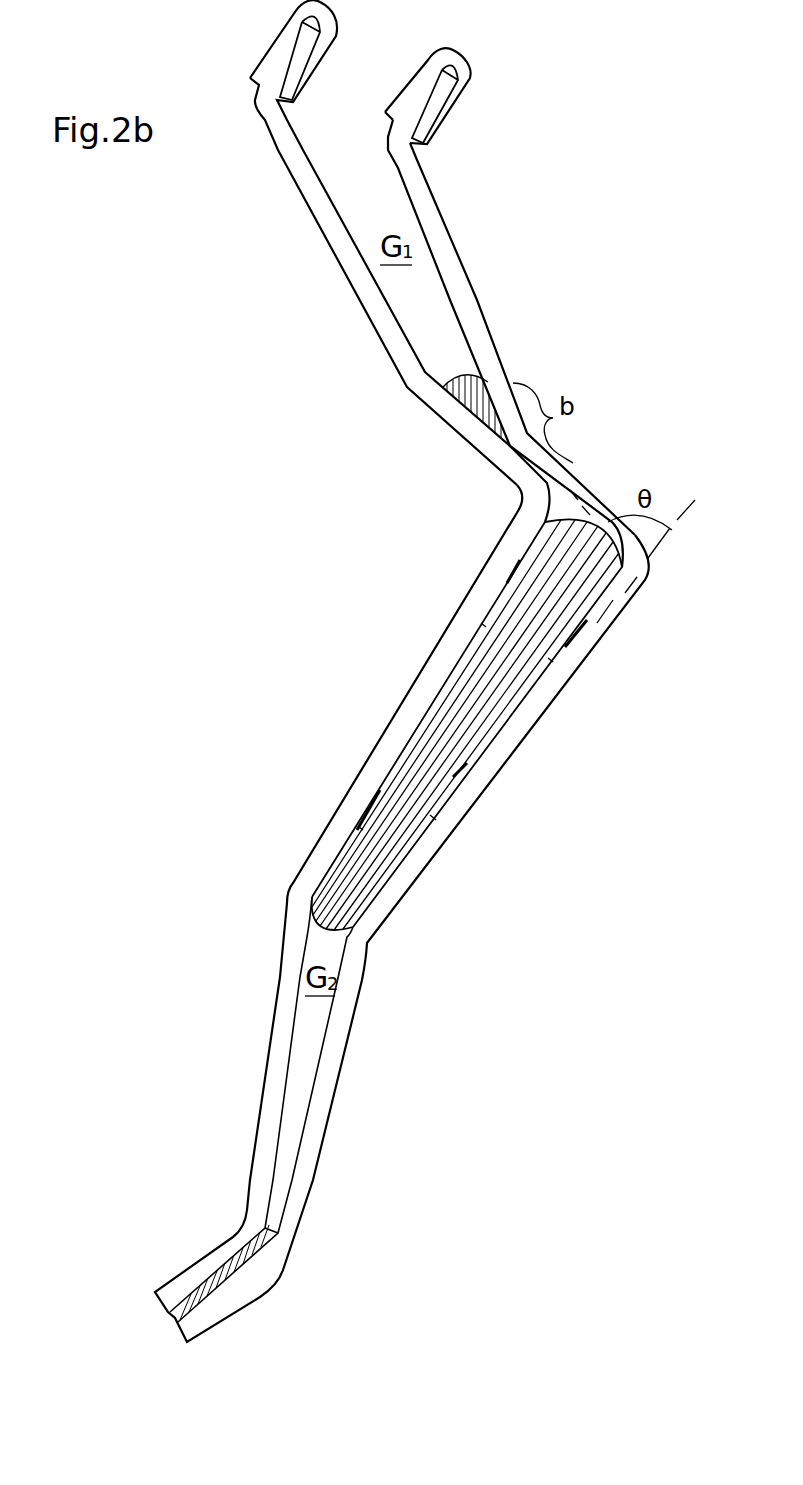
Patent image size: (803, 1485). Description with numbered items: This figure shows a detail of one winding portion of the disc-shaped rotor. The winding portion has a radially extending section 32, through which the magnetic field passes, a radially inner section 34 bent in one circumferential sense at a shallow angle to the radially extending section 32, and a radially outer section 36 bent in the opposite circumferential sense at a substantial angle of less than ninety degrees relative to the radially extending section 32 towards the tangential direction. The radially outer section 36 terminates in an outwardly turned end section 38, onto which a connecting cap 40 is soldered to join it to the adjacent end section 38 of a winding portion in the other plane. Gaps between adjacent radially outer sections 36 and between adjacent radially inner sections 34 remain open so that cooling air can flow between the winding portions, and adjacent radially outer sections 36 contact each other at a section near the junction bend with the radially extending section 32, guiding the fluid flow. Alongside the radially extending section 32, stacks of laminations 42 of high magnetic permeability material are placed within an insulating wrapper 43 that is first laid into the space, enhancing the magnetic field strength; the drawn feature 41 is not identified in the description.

The radially extending section 32 is at (447, 823).
The radially inner section 34 is at (318, 1132).
The radially outer section 36 is at (448, 263).
The end section 38 is at (423, 102).
The connecting cap 40 is at (457, 58).
The joint 41 is at (477, 400).
The laminations 42 is at (493, 700).
The insulating wrapper 43 is at (315, 927).